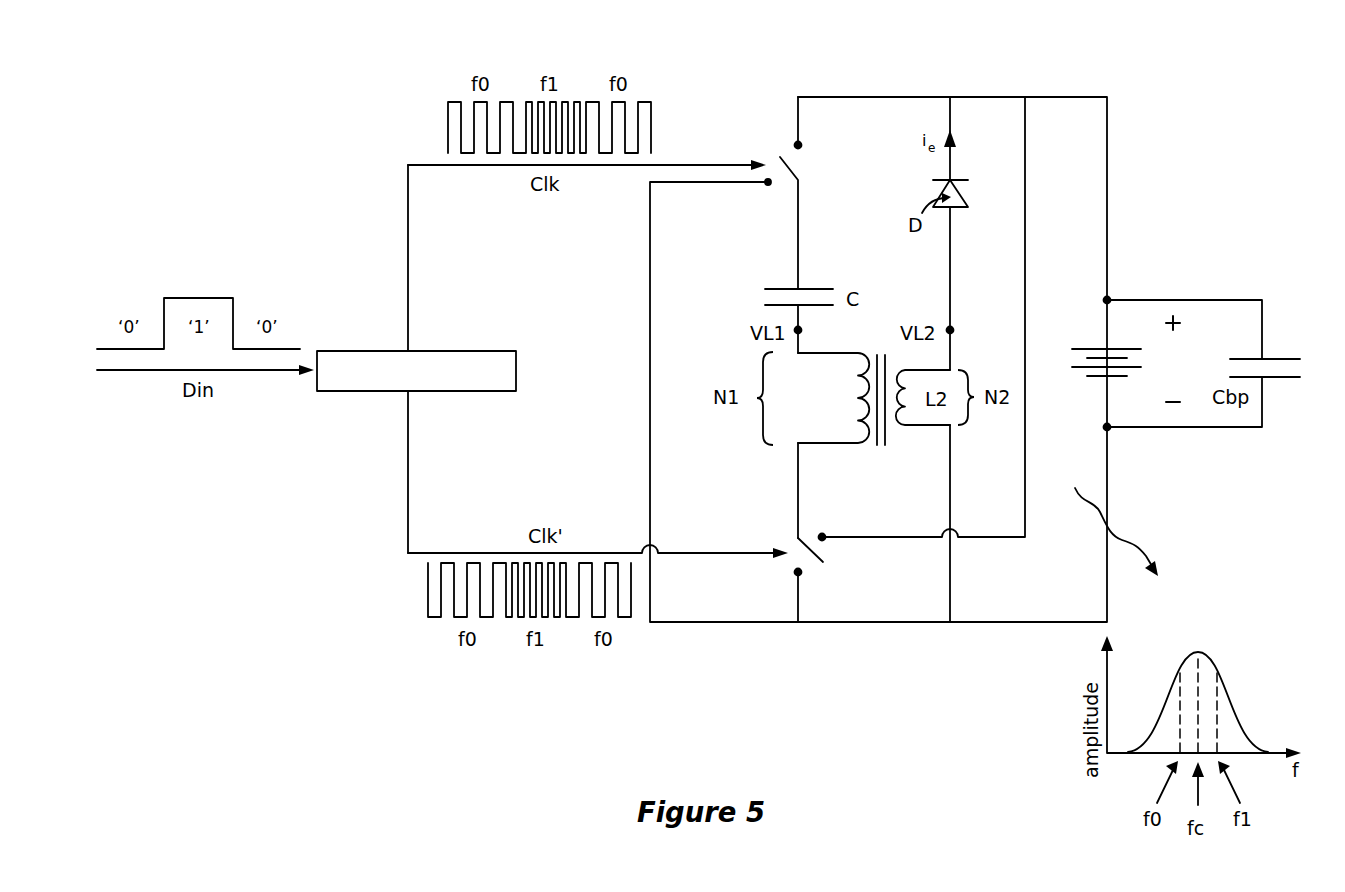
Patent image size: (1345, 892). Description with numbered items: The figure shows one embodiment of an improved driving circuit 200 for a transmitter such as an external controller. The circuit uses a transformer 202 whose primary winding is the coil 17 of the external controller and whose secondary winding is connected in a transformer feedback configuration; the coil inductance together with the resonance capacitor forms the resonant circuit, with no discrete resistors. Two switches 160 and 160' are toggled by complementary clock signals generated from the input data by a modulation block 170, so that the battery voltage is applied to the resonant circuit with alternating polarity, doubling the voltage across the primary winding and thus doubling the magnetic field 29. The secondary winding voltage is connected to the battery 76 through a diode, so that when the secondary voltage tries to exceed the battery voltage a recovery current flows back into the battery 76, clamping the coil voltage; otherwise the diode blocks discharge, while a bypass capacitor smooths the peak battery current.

The driving circuit 200 is at (250, 151).
The modulation block 170 is at (416, 371).
The switch 160 is at (811, 193).
The switch 160' is at (822, 580).
The coil 17 is at (833, 398).
The transformer 202 is at (873, 432).
The battery 76 is at (1167, 364).
The magnetic field 29 is at (1148, 548).